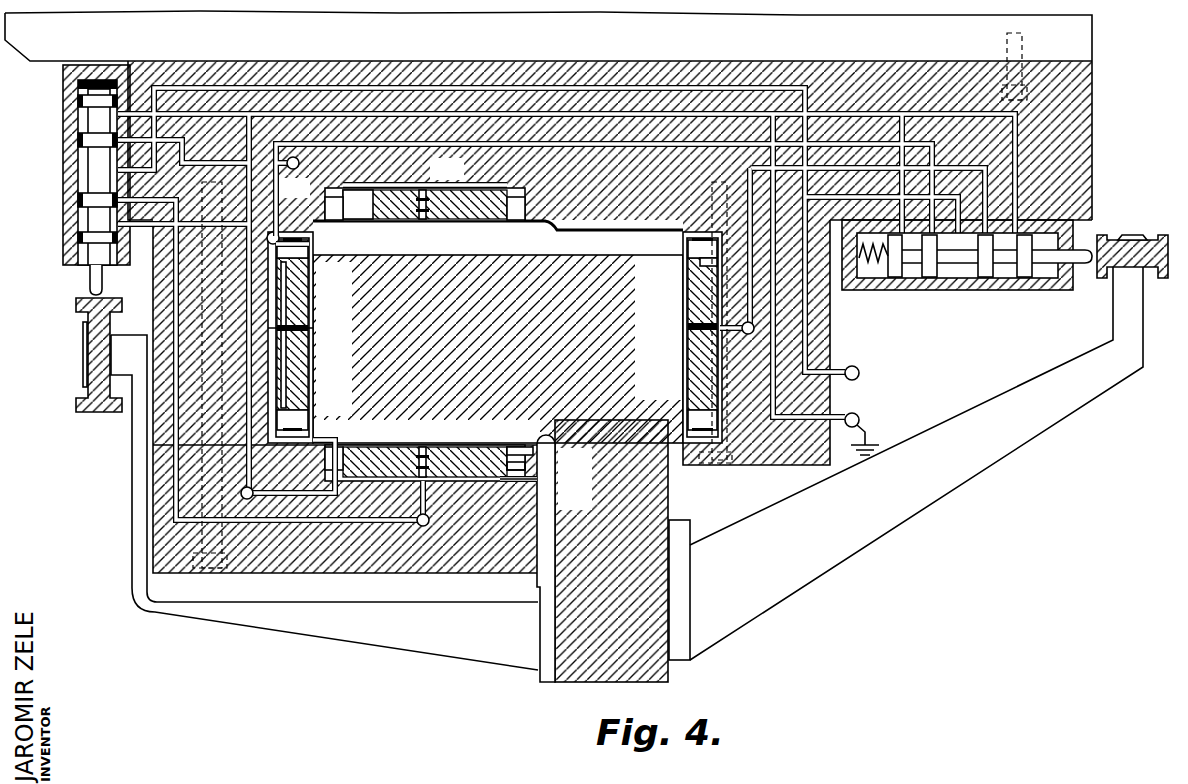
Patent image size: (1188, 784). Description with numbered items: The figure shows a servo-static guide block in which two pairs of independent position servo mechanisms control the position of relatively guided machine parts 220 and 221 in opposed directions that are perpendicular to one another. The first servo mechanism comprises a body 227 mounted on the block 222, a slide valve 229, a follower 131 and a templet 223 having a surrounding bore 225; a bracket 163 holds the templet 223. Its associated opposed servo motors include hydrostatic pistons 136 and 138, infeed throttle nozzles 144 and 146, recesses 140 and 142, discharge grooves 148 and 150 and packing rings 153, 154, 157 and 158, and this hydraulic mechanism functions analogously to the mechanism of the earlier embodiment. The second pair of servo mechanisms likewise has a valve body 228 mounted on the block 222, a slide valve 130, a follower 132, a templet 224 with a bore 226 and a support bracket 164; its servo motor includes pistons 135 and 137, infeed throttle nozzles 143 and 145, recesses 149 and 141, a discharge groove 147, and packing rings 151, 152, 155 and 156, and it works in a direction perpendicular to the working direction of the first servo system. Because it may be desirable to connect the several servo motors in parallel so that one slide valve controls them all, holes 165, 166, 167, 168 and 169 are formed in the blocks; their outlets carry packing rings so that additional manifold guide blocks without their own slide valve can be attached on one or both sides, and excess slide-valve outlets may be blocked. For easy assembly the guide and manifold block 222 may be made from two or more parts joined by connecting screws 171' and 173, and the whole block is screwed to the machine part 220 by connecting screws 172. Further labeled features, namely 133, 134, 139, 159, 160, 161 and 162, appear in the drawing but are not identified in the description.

The machine part 220 is at (55, 57).
The body 227 is at (72, 102).
The slide valve 229 is at (78, 143).
The follower 131 is at (90, 280).
The surrounding bore 225 is at (83, 357).
The templet 223 is at (95, 393).
The connecting screws 172 is at (1014, 51).
The block 222 is at (1092, 140).
The bore 226 is at (1128, 236).
The machine part 221 is at (825, 303).
The slide valve 130 is at (930, 280).
The valve body 228 is at (1030, 280).
The follower 132 is at (1080, 280).
The templet 224 is at (1102, 280).
The hole 168 is at (755, 328).
The pressure port 133 is at (866, 386).
The exhaust port 134 is at (860, 416).
The hole 167 is at (297, 170).
The hydrostatic piston 136 is at (450, 192).
The packing ring 153 is at (328, 222).
The packing ring 154 is at (350, 220).
The infeed throttle nozzle 144 is at (418, 221).
The recess 140 is at (440, 222).
The piston 160 is at (466, 222).
The discharge groove 148 is at (512, 222).
The packing ring 155 is at (688, 243).
The recess 149 is at (692, 256).
The packing ring 156 is at (702, 265).
The recess 141 is at (687, 309).
The infeed throttle nozzle 145 is at (688, 328).
The piston 161 is at (687, 352).
The piston 137 is at (688, 380).
The hole 166 is at (310, 252).
The infeed throttle nozzle 143 is at (305, 322).
The piston 135 is at (300, 345).
The piston 139 is at (306, 372).
The packing ring 151 is at (283, 406).
The piston 159 is at (306, 392).
The discharge groove 147 is at (306, 418).
The packing ring 152 is at (332, 447).
The recess 142 is at (372, 447).
The infeed throttle nozzle 146 is at (421, 447).
The piston 162 is at (468, 447).
The discharge groove 150 is at (515, 447).
The packing ring 157 is at (522, 452).
The packing ring 158 is at (515, 470).
The hydrostatic piston 138 is at (503, 481).
The connecting screw 173 is at (712, 466).
The support bracket 164 is at (716, 538).
The connecting screw 171' is at (208, 389).
The hole 169 is at (250, 500).
The bracket 163 is at (345, 612).
The hole 165 is at (423, 528).